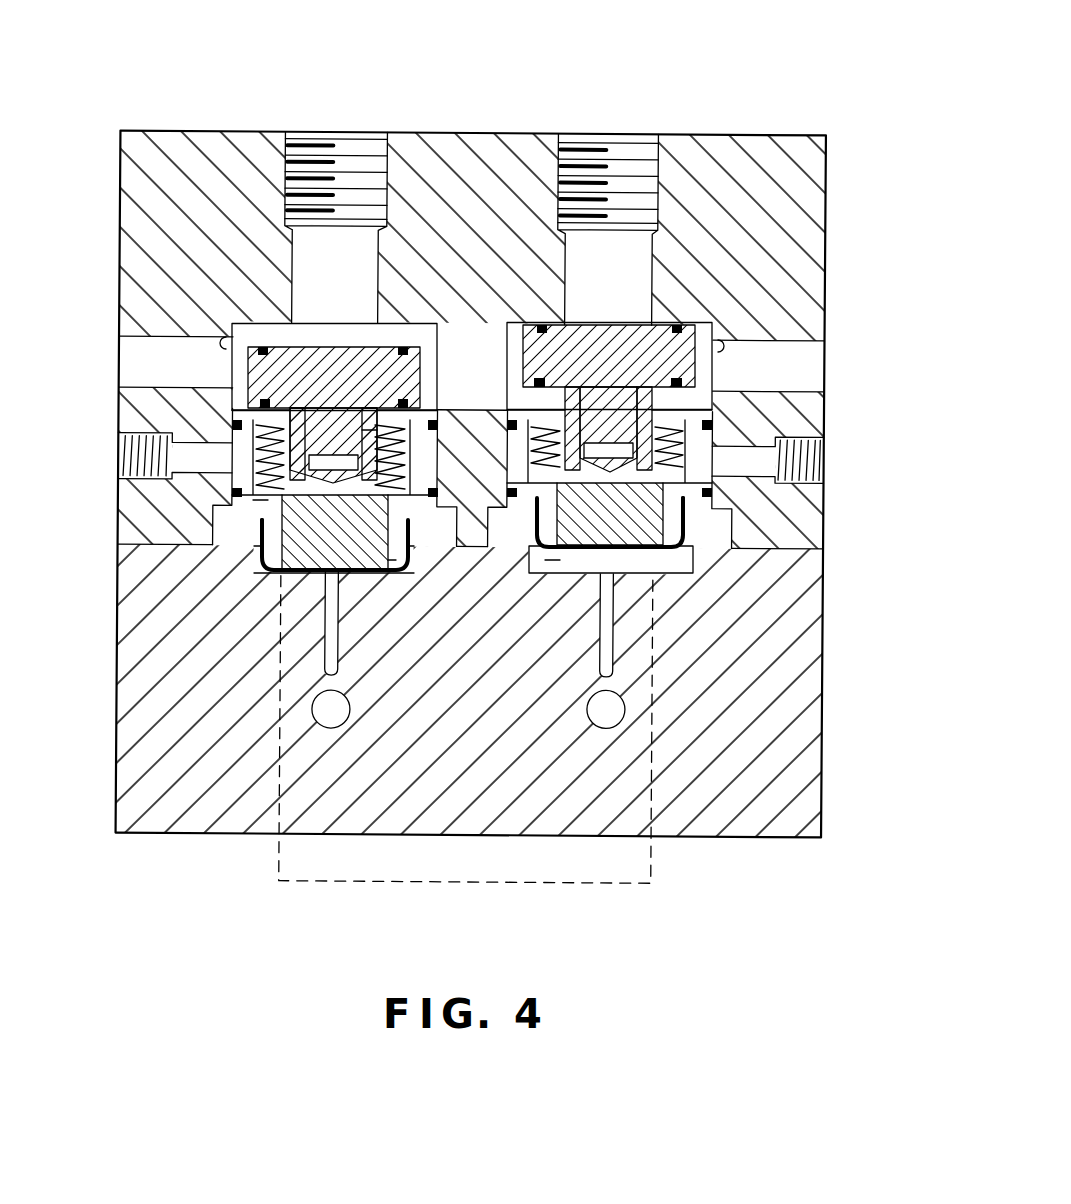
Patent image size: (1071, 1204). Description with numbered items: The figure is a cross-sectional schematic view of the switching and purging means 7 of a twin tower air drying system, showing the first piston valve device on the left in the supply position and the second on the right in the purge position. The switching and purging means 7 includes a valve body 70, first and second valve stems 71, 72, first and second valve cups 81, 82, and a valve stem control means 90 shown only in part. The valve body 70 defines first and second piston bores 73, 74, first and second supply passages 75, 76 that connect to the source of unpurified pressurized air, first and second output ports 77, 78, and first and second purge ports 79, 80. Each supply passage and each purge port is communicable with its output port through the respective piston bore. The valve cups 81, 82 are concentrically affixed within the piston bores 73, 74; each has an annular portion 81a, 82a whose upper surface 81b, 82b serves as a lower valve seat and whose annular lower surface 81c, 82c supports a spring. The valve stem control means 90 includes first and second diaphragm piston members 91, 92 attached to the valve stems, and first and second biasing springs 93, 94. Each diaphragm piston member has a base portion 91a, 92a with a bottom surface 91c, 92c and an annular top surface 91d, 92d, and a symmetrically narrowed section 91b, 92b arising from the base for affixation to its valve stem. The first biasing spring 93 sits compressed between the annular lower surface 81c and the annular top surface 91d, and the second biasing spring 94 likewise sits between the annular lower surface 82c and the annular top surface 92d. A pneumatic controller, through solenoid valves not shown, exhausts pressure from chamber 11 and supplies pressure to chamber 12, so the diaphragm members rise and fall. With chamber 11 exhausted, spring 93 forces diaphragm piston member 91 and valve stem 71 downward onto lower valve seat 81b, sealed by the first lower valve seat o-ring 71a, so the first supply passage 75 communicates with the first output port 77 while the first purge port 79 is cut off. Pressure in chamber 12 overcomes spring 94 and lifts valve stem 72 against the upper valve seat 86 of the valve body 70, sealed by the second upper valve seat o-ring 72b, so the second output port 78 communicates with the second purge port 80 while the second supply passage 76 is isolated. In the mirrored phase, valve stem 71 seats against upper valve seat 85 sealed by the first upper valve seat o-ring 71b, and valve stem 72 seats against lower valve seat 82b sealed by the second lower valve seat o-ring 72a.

The switching and purging means 7 is at (780, 92).
The chamber 11 is at (397, 575).
The chamber 12 is at (560, 560).
The valve body 70 is at (120, 155).
The first valve stem 71 is at (333, 357).
The first lower valve seat o-ring 71a is at (233, 414).
The first upper valve seat o-ring 71b is at (263, 344).
The second valve stem 72 is at (606, 325).
The second lower valve seat o-ring 72a is at (706, 395).
The second upper valve seat o-ring 72b is at (540, 327).
The first piston bore 73 is at (230, 330).
The second piston bore 74 is at (700, 344).
The first supply passage 75 is at (306, 149).
The second supply passage 76 is at (638, 149).
The first output port 77 is at (131, 364).
The second output port 78 is at (821, 363).
The first purge port 79 is at (125, 444).
The second purge port 80 is at (820, 450).
The first valve cup 81 is at (250, 554).
The annular portion 81a is at (403, 408).
The upper surface 81b is at (406, 351).
The annular lower surface 81c is at (382, 438).
The second valve cup 82 is at (722, 552).
The annular portion 82a is at (700, 458).
The upper surface 82b is at (535, 383).
The annular lower surface 82c is at (507, 494).
The upper valve seat 85 is at (400, 334).
The upper valve seat 86 is at (716, 325).
The valve stem control means 90 is at (308, 888).
The first diaphragm piston member 91 is at (266, 572).
The base portion 91a is at (340, 563).
The symmetrically narrowed section 91b is at (236, 490).
The bottom surface 91c is at (342, 576).
The annular top surface 91d is at (235, 517).
The second diaphragm piston member 92 is at (641, 561).
The base portion 92a is at (621, 548).
The symmetrically narrowed section 92b is at (655, 325).
The bottom surface 92c is at (594, 562).
The annular top surface 92d is at (712, 524).
The first biasing spring 93 is at (240, 450).
The second biasing spring 94 is at (706, 489).